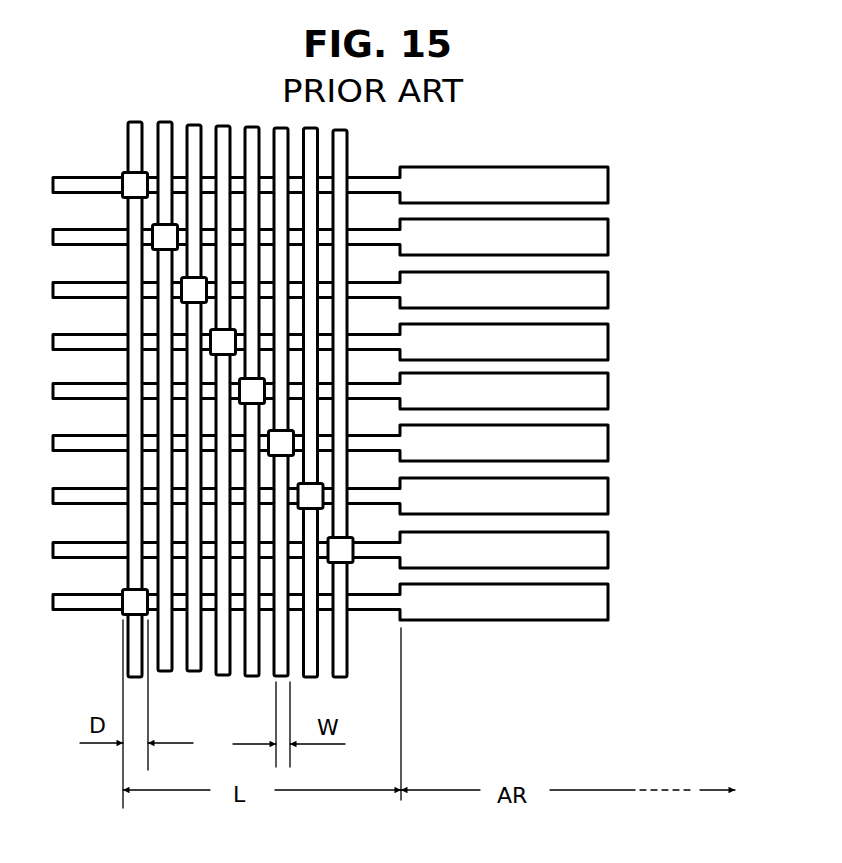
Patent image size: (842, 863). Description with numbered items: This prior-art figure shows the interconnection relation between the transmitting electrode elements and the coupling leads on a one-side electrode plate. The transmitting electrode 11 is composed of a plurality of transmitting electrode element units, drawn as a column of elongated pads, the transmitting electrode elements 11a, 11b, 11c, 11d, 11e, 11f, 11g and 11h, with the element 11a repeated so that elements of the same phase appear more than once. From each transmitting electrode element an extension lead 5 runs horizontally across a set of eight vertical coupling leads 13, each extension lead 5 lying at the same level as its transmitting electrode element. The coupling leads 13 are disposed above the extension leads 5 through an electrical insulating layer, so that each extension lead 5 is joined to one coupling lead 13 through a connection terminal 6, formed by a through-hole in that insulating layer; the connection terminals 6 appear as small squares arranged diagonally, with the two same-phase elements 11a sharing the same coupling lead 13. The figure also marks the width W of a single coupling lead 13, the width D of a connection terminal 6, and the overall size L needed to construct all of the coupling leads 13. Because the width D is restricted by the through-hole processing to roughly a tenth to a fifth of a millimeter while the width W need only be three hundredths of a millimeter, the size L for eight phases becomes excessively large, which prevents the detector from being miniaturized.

The extension lead 5 is at (368, 284).
The connection terminal 6 is at (126, 176).
The transmitting electrode 11 is at (554, 430).
The transmitting electrode element 11a is at (597, 188).
The transmitting electrode element 11b is at (597, 240).
The transmitting electrode element 11c is at (597, 293).
The transmitting electrode element 11d is at (597, 345).
The transmitting electrode element 11e is at (597, 394).
The transmitting electrode element 11f is at (597, 446).
The transmitting electrode element 11g is at (597, 499).
The transmitting electrode element 11h is at (597, 553).
The coupling lead 13 is at (165, 675).